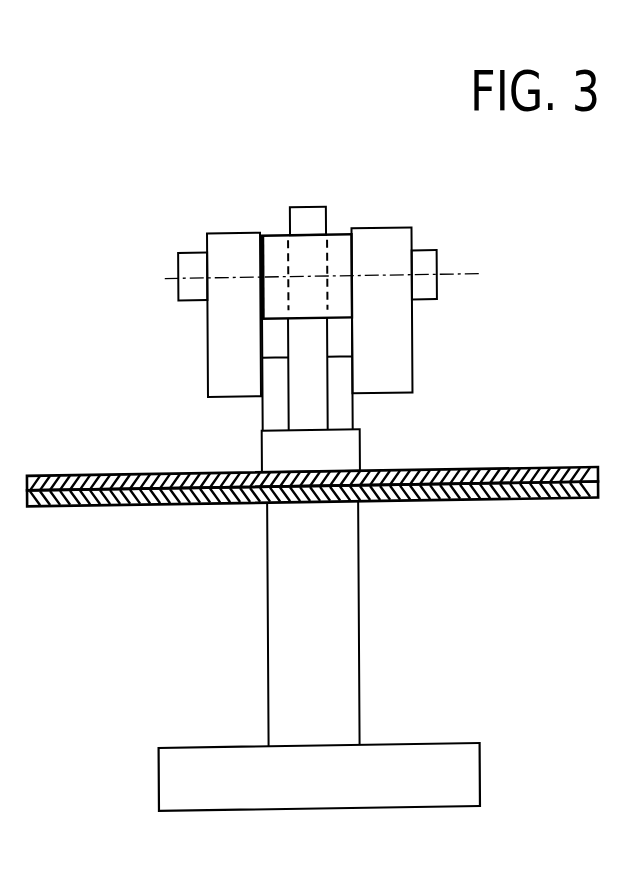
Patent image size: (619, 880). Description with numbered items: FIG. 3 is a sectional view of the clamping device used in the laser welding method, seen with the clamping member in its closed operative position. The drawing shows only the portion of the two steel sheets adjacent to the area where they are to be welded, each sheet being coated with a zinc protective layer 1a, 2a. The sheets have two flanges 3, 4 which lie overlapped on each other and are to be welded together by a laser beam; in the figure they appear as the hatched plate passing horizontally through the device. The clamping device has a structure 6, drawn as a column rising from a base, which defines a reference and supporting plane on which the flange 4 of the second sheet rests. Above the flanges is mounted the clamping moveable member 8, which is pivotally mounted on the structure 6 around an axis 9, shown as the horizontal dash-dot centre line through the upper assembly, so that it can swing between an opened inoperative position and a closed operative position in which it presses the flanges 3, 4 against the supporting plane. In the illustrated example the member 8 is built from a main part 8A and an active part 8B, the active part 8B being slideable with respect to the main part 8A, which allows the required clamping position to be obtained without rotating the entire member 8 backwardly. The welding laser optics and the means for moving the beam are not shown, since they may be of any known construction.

The zinc protective layer 1a is at (550, 471).
The zinc protective layer 2a is at (522, 500).
The flange 3 is at (456, 471).
The flange 4 is at (458, 499).
The structure 6 is at (379, 714).
The clamping moveable member 8 is at (334, 230).
The main part 8A is at (275, 233).
The active part 8B is at (303, 207).
The axis 9 is at (461, 270).